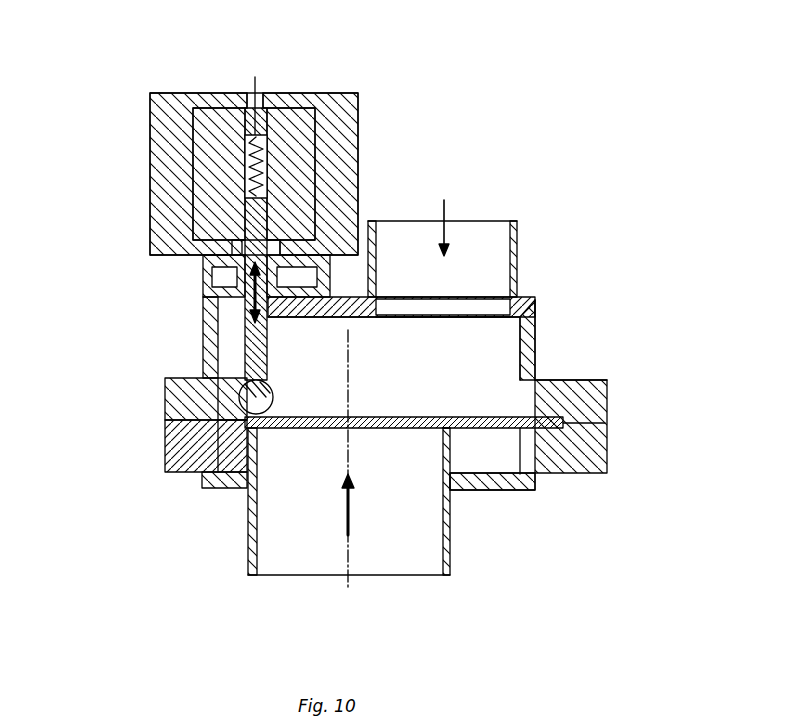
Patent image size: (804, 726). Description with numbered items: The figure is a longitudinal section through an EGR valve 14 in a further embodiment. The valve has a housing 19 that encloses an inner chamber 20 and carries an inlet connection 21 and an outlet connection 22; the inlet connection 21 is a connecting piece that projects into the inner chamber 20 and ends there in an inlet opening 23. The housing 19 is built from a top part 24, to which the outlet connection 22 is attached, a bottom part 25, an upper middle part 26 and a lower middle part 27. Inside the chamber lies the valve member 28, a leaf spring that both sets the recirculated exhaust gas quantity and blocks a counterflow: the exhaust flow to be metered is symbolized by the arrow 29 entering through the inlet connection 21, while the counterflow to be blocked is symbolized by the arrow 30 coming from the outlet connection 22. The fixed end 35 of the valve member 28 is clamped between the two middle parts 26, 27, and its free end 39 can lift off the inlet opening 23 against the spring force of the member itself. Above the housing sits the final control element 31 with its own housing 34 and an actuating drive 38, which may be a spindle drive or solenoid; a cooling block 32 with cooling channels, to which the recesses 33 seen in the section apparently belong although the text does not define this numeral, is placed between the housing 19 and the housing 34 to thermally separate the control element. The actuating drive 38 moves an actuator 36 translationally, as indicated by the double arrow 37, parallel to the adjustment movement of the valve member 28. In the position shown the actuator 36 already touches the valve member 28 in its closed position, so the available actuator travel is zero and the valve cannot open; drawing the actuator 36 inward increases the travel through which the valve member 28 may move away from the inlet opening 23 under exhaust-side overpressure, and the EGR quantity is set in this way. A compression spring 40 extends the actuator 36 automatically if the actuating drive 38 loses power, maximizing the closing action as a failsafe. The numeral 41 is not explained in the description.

The EGR valve 14 is at (624, 127).
The housing 19 is at (578, 381).
The inner chamber 20 is at (443, 362).
The inlet connection 21 is at (447, 540).
The outlet connection 22 is at (513, 248).
The inlet opening 23 is at (440, 430).
The top part 24 is at (541, 310).
The bottom part 25 is at (220, 486).
The upper middle part 26 is at (180, 396).
The lower middle part 27 is at (175, 450).
The valve member 28 is at (307, 430).
The arrow 29 is at (356, 522).
The arrow 30 is at (447, 240).
The final control element 31 is at (361, 128).
The cooling block 32 is at (202, 266).
The recess 33 is at (228, 280).
The housing of the final control element 34 is at (165, 140).
The fixed end 35 is at (540, 430).
The actuator 36 is at (257, 379).
The double arrow 37 is at (245, 304).
The actuating drive 38 is at (215, 172).
The free end 39 is at (242, 415).
The compression spring 40 is at (263, 160).
The pipe wall 41 is at (447, 452).